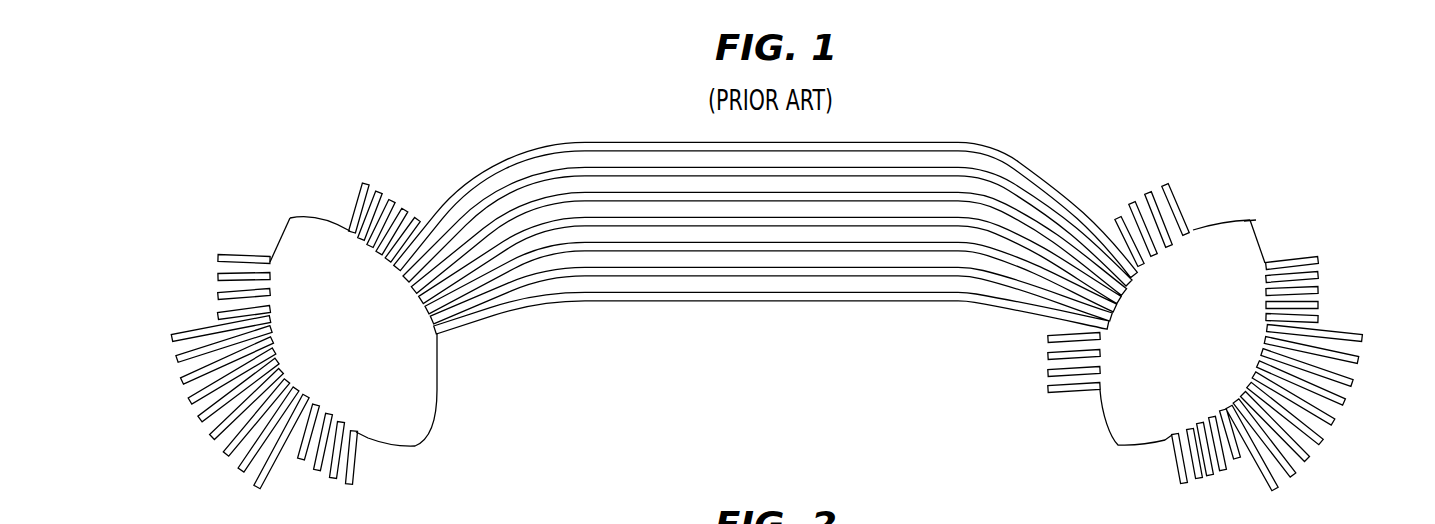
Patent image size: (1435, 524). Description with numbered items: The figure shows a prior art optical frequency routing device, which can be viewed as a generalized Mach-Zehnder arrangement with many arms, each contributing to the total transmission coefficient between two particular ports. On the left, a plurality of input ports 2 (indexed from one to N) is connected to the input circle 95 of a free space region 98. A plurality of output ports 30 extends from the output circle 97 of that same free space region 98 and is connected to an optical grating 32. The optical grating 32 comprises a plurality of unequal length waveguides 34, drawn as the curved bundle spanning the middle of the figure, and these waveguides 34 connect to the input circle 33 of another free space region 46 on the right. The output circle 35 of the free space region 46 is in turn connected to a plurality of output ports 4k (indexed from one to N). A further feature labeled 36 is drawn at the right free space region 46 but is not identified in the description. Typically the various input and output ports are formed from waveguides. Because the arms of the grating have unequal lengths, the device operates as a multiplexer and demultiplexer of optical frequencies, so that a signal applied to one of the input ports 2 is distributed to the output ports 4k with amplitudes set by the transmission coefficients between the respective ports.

The input ports 2 is at (225, 450).
The output ports 30 is at (465, 182).
The optical grating 32 is at (957, 310).
The unequal length waveguides 34 is at (1073, 188).
The input circle 33 is at (1213, 220).
The output circle 35 is at (1263, 245).
The hub corner 36 is at (1250, 220).
The free space region 46 is at (1118, 446).
The input circle 95 is at (279, 238).
The output circle 97 is at (319, 219).
The free space region 98 is at (288, 217).
The output ports 4k is at (1345, 403).